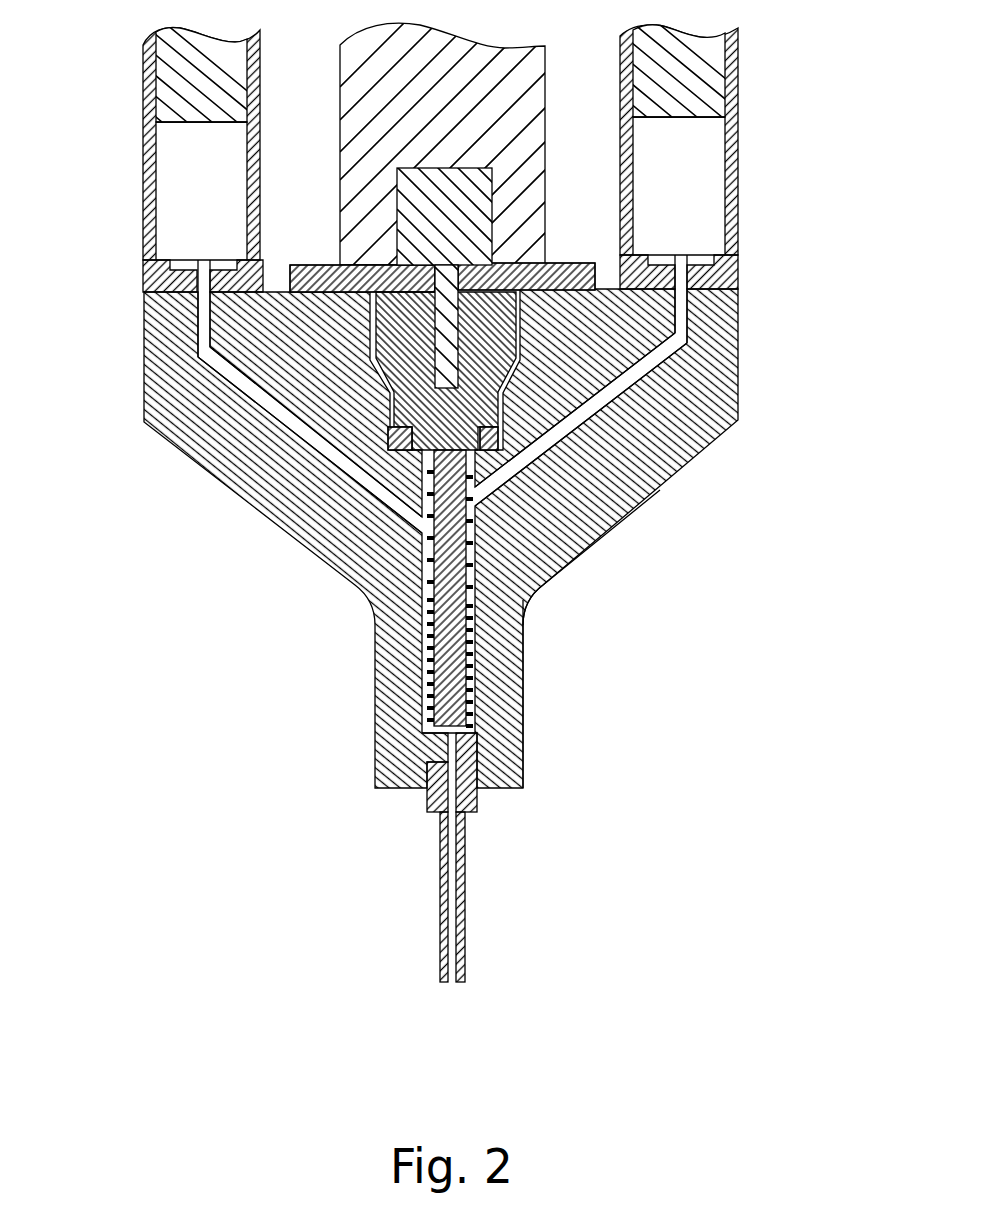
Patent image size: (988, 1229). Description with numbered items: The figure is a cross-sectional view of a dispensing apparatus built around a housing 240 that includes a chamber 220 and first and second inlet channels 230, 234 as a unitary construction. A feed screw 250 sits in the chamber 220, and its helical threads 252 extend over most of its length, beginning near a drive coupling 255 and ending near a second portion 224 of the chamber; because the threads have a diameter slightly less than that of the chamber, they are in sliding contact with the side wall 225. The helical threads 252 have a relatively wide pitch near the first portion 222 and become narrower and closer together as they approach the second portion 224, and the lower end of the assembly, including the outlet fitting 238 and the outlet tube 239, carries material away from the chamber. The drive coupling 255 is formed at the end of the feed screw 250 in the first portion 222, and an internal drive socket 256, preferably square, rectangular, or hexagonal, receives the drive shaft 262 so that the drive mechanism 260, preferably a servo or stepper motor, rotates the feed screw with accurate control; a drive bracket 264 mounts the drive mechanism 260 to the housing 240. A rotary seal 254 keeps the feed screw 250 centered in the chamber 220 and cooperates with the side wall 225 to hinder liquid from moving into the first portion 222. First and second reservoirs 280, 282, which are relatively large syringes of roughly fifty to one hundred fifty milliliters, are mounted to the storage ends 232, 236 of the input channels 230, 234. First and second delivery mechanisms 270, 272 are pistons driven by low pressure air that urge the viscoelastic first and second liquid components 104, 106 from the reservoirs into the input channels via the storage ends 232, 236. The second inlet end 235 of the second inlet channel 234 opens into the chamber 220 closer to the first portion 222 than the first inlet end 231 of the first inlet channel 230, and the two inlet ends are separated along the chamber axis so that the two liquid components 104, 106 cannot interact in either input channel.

The first liquid component 104 is at (205, 150).
The second liquid component 106 is at (680, 206).
The chamber 220 is at (432, 545).
The first portion 222 is at (390, 372).
The second portion 224 is at (477, 738).
The side wall 225 is at (522, 620).
The first inlet channel 230 is at (272, 412).
The first inlet end 231 is at (402, 522).
The storage end 232 is at (203, 296).
The second inlet channel 234 is at (667, 462).
The second inlet end 235 is at (560, 560).
The storage end 236 is at (683, 336).
The nozzle 238 is at (478, 765).
The outlet tube 239 is at (467, 845).
The housing 240 is at (627, 500).
The feed screw 250 is at (480, 672).
The helical threads 252 is at (483, 606).
The rotary seal 254 is at (398, 456).
The drive coupling 255 is at (495, 284).
The internal drive socket 256 is at (637, 287).
The drive mechanism 260 is at (492, 66).
The drive shaft 262 is at (503, 237).
The drive bracket 264 is at (310, 262).
The first delivery mechanism 270 is at (173, 62).
The second delivery mechanism 272 is at (705, 70).
The first reservoir 280 is at (143, 92).
The second reservoir 282 is at (740, 90).